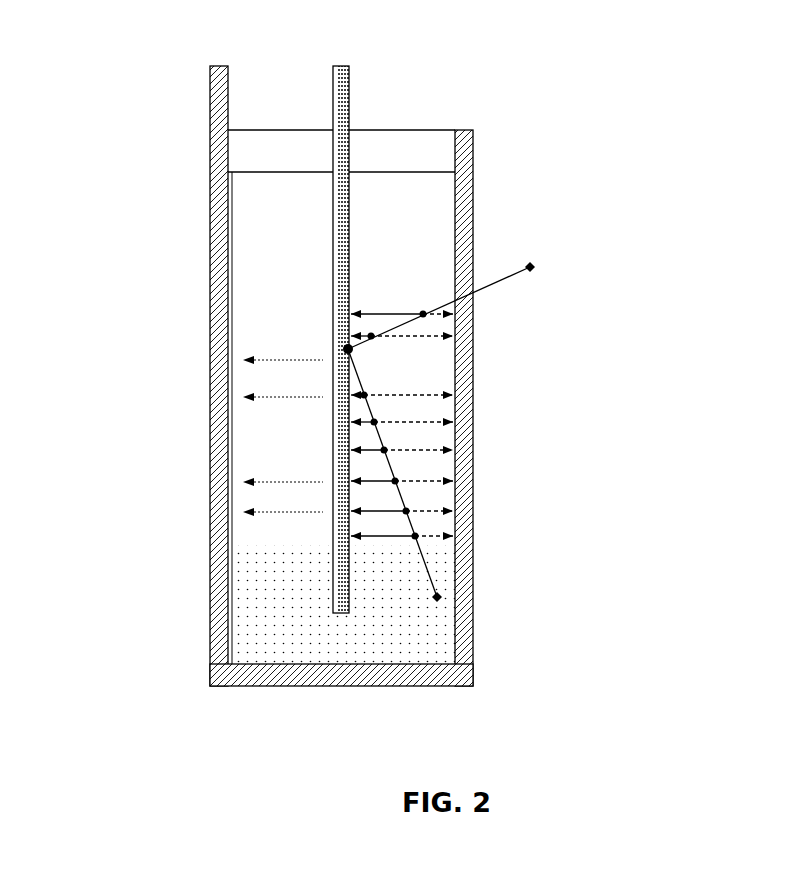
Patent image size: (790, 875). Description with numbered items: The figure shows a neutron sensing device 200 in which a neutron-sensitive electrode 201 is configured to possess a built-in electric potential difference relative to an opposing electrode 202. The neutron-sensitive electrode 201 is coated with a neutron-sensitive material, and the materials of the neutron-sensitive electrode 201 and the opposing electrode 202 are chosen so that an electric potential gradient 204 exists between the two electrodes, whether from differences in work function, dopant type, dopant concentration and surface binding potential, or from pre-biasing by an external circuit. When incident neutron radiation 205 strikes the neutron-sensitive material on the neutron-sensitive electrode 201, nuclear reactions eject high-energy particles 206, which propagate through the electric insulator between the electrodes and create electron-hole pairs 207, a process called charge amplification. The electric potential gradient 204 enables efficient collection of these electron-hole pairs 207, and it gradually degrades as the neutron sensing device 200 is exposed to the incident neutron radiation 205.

The neutron sensing device 200 is at (387, 355).
The neutron-sensitive electrode 201 is at (348, 318).
The opposing electrode 202 is at (201, 355).
The electric potential gradient 204 is at (275, 466).
The incident neutron radiation 205 is at (346, 348).
The high-energy particles 206 is at (262, 603).
The electron-hole pairs 207 is at (402, 425).